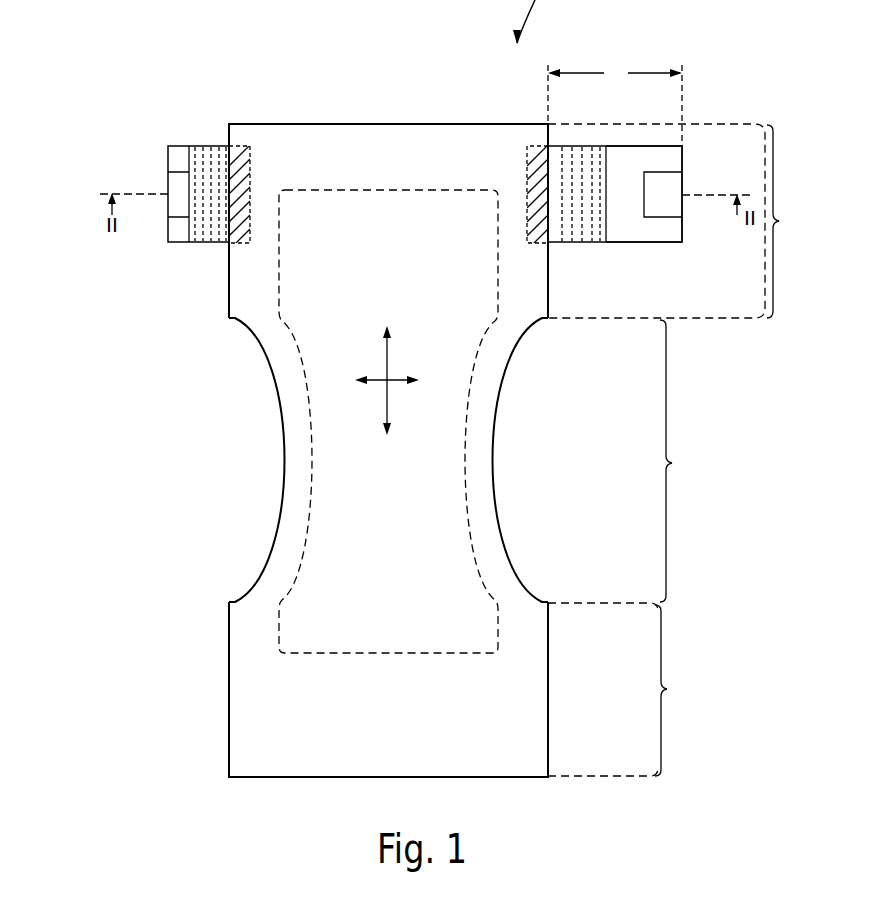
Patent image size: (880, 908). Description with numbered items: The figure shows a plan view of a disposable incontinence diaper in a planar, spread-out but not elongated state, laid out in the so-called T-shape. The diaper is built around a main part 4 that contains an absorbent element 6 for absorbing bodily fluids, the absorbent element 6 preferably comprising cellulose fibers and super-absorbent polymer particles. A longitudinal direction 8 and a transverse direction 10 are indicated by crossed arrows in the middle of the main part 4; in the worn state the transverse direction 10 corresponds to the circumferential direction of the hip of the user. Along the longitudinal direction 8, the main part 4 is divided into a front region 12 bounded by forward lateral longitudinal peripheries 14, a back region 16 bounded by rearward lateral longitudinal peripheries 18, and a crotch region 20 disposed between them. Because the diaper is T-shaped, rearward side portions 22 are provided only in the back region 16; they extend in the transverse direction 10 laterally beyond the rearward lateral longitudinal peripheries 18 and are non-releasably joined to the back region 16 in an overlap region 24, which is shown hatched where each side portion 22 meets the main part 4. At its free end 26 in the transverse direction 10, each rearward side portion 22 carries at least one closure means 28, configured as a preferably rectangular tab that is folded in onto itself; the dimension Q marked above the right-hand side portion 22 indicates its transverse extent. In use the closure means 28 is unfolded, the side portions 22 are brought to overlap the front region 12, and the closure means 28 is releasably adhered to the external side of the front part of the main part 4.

The main part 4 is at (241, 417).
The absorbent element 6 is at (407, 635).
The longitudinal direction 8 is at (388, 350).
The transverse direction 10 is at (397, 382).
The front region 12 is at (626, 689).
The forward lateral longitudinal peripheries 14 is at (227, 727).
The back region 16 is at (681, 221).
The rearward lateral longitudinal peripheries 18 is at (229, 270).
The crotch region 20 is at (686, 461).
The rearward side portions 22 is at (203, 134).
The overlap region 24 is at (240, 152).
The free end 26 is at (682, 157).
The closure means 28 is at (178, 187).
The tab width Q is at (615, 103).